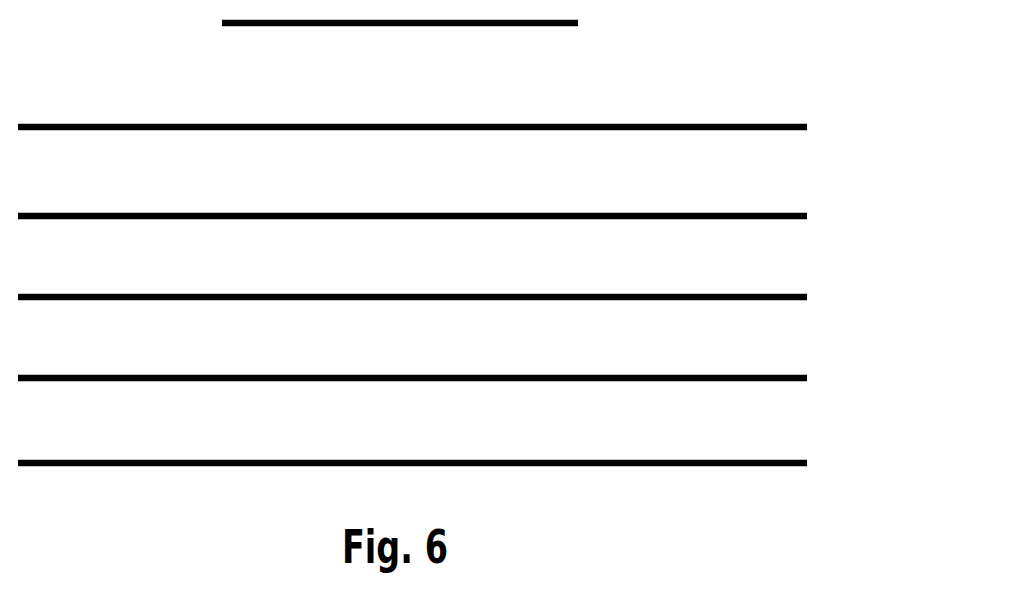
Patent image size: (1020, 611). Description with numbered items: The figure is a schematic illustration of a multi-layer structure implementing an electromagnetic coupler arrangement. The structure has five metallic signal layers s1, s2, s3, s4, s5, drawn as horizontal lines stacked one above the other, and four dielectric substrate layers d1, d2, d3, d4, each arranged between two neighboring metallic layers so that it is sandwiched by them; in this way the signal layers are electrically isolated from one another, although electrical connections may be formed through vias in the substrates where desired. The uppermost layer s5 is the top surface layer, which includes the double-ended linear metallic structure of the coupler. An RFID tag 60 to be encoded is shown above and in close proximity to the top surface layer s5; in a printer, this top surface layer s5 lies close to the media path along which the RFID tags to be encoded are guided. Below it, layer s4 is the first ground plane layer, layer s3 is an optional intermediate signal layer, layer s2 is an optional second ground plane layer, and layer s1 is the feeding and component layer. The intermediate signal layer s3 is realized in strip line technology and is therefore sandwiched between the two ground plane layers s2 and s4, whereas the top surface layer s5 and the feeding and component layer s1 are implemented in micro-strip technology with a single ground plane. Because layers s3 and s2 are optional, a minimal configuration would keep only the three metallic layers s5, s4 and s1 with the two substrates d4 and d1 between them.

The RFID tag 60 is at (423, 23).
The feeding/component layer s1 is at (429, 463).
The second ground plane layer s2 is at (429, 378).
The intermediate signal layer s3 is at (429, 297).
The first ground plane layer s4 is at (429, 217).
The top surface layer s5 is at (429, 127).
The dielectric substrate layer d1 is at (412, 420).
The dielectric substrate layer d2 is at (412, 337).
The dielectric substrate layer d3 is at (412, 256).
The dielectric substrate layer d4 is at (412, 171).